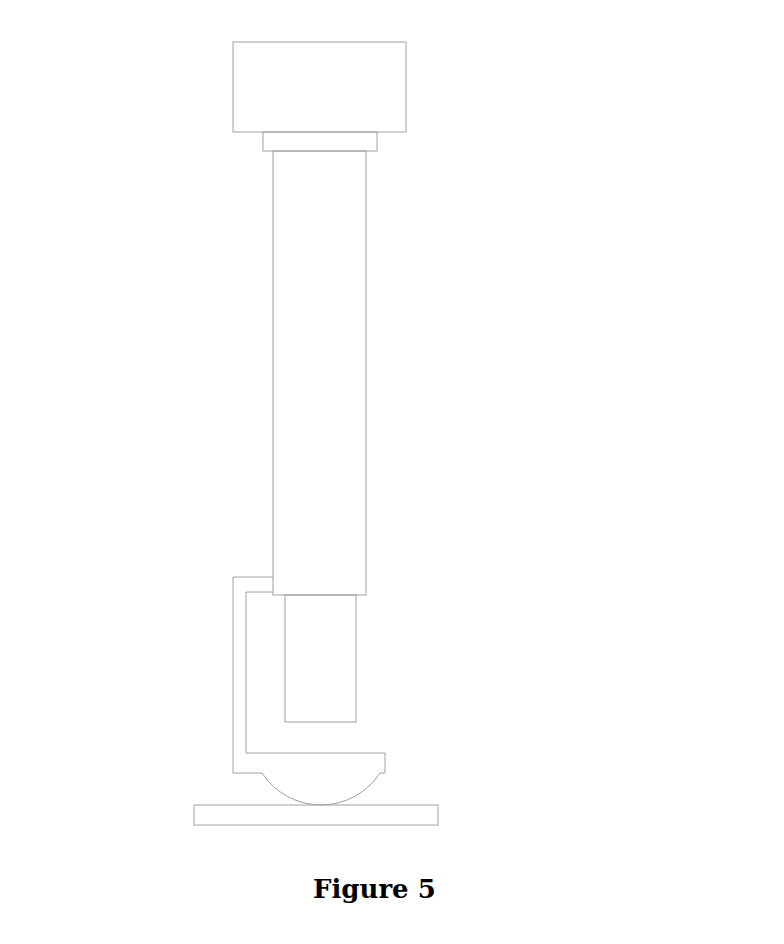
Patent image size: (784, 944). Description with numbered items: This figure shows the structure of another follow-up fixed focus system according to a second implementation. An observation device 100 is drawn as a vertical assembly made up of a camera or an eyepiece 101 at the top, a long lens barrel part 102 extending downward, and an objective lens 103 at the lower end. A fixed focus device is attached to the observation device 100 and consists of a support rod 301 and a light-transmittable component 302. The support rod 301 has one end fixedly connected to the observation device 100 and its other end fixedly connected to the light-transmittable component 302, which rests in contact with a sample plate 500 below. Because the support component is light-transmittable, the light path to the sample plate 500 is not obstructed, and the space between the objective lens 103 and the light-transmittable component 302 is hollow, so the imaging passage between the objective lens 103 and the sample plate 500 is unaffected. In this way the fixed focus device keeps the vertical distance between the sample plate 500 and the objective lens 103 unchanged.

The observation device 100 is at (472, 365).
The camera or eyepiece 101 is at (317, 82).
The lens barrel part 102 is at (342, 327).
The objective lens 103 is at (392, 657).
The support rod 301 is at (246, 681).
The light-transmittable component 302 is at (308, 792).
The sample plate 500 is at (385, 813).